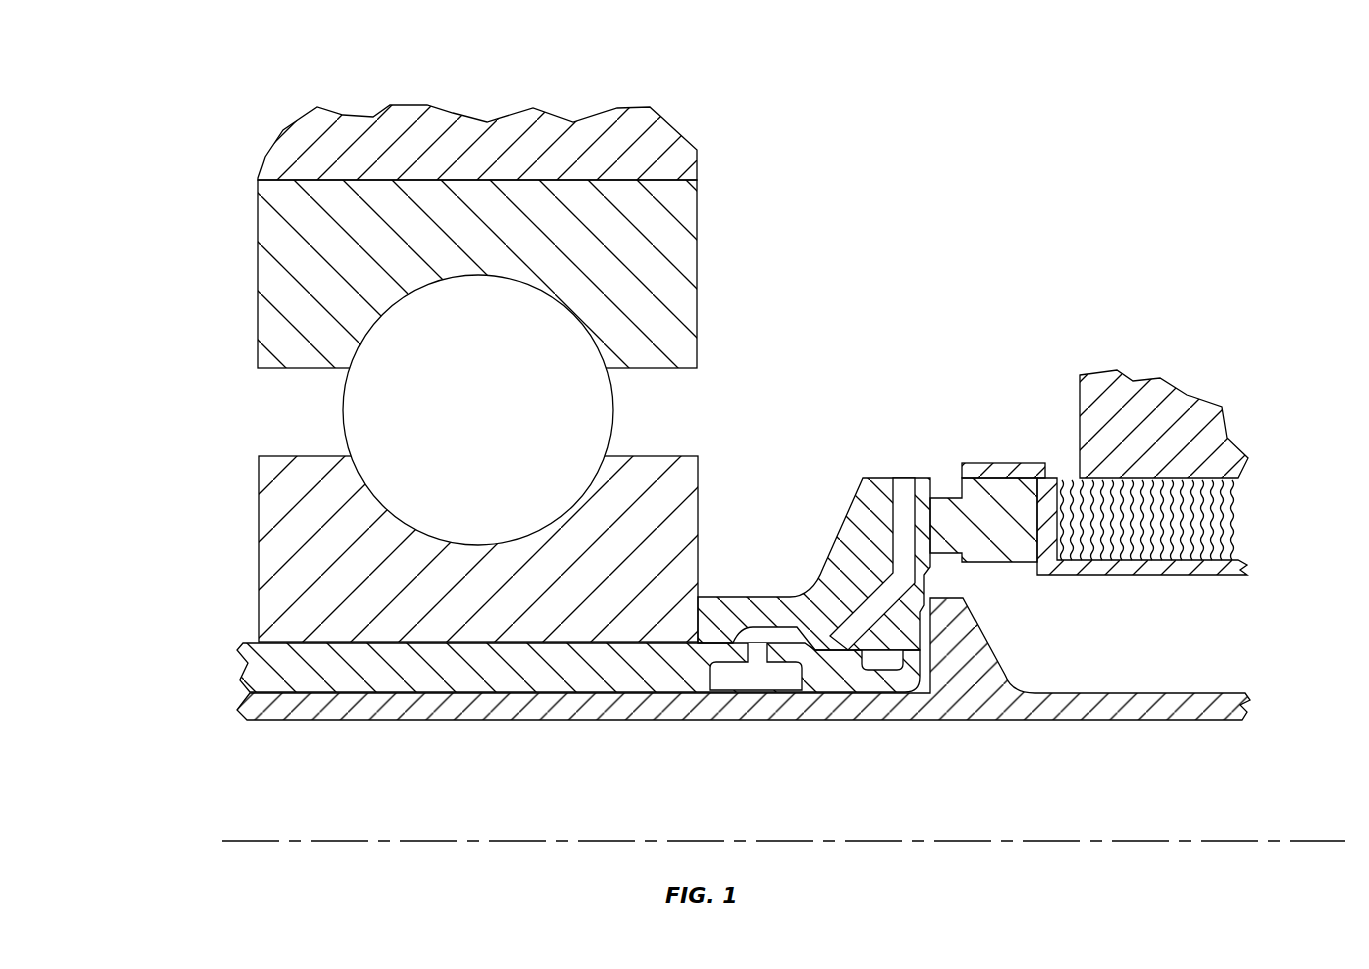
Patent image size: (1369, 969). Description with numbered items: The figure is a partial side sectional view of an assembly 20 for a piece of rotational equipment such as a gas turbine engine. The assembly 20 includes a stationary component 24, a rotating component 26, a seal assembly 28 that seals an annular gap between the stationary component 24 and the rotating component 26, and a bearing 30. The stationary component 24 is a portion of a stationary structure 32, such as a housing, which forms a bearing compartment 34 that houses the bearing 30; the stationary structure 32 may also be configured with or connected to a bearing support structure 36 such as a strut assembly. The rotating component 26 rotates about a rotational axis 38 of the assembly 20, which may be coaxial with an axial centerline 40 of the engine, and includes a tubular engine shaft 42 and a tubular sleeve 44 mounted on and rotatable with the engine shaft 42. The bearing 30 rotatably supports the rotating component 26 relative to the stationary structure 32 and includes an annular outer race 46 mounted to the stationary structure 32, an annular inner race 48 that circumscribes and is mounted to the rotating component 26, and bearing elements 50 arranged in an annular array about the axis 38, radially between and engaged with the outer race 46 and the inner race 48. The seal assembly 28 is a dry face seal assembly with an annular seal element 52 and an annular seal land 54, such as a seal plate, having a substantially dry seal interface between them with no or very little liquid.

The assembly 20 is at (198, 112).
The stationary component 24 is at (1190, 392).
The rotating component 26 is at (706, 708).
The seal assembly 28 is at (972, 489).
The bearing 30 is at (411, 274).
The stationary structure 32 is at (759, 276).
The bearing compartment 34 is at (892, 155).
The bearing support structure 36 is at (652, 110).
The rotational axis 38 is at (783, 792).
The axial centerline 40 is at (1285, 840).
The engine shaft 42 is at (1140, 722).
The tubular sleeve 44 is at (247, 665).
The outer race 46 is at (258, 332).
The inner race 48 is at (259, 520).
The bearing elements 50 is at (495, 428).
The seal element 52 is at (1000, 562).
The seal land 54 is at (843, 523).